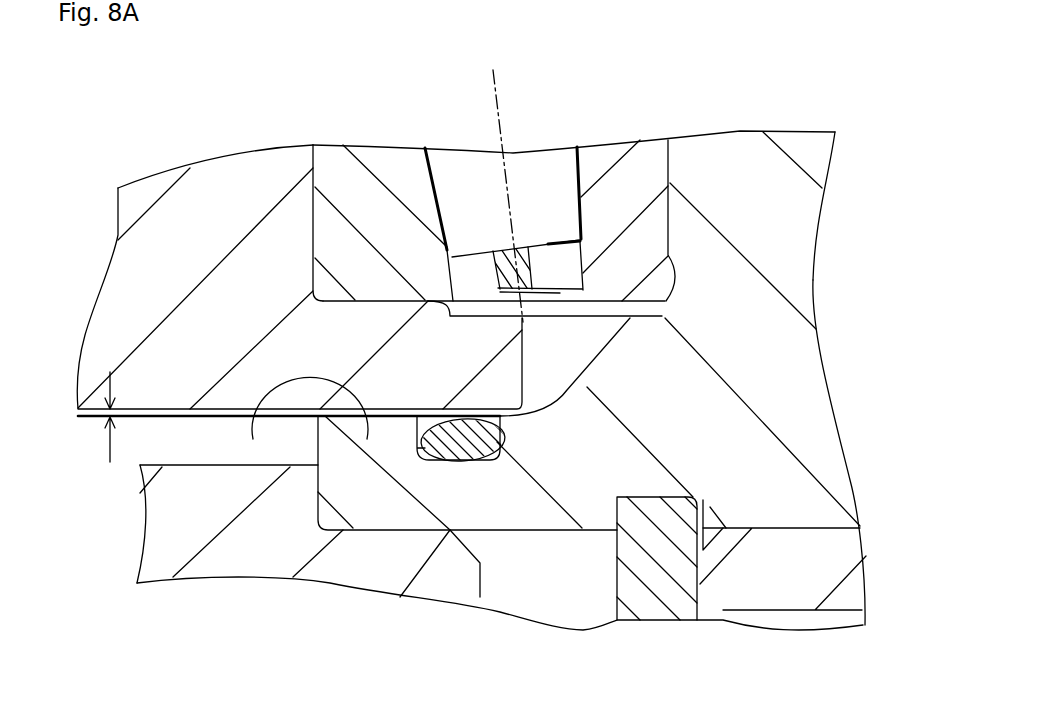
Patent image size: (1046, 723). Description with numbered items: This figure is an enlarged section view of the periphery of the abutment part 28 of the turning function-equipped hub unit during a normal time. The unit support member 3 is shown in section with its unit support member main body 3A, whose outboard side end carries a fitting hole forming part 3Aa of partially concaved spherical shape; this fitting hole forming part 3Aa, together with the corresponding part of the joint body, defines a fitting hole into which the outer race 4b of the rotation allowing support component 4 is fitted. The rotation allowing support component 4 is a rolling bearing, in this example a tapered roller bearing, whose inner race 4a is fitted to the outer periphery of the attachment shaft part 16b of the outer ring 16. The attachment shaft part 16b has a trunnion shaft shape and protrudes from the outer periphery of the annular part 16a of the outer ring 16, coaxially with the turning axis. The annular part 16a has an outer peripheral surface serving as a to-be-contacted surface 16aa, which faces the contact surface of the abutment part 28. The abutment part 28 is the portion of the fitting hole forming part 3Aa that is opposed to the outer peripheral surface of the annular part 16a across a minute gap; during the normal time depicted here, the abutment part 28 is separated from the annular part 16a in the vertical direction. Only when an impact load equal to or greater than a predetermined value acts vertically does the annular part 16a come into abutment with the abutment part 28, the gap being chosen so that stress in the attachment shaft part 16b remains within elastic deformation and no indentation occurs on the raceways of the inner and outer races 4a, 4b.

The unit support member 3 is at (240, 310).
The unit support member main body 3A is at (205, 197).
The fitting hole forming part 3Aa is at (477, 357).
The rotation allowing support component 4 is at (523, 167).
The inner race 4a is at (618, 153).
The outer race 4b is at (345, 180).
The outer ring 16 is at (670, 393).
The annular part 16a is at (423, 497).
The to-be-contacted surface 16aa is at (242, 404).
The attachment shaft part 16b is at (725, 152).
The abutment part 28 is at (352, 441).